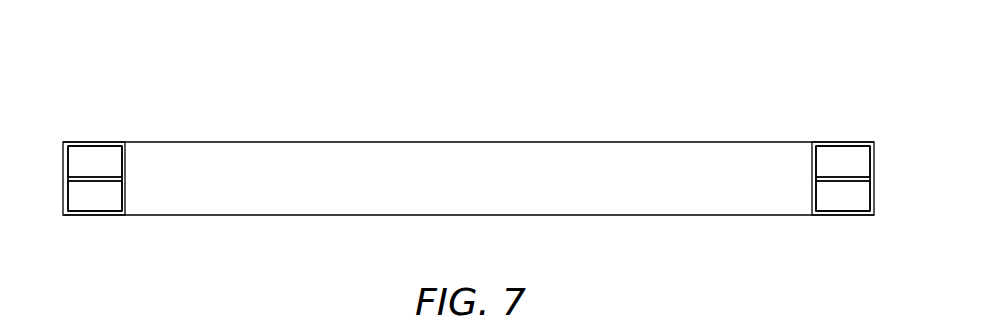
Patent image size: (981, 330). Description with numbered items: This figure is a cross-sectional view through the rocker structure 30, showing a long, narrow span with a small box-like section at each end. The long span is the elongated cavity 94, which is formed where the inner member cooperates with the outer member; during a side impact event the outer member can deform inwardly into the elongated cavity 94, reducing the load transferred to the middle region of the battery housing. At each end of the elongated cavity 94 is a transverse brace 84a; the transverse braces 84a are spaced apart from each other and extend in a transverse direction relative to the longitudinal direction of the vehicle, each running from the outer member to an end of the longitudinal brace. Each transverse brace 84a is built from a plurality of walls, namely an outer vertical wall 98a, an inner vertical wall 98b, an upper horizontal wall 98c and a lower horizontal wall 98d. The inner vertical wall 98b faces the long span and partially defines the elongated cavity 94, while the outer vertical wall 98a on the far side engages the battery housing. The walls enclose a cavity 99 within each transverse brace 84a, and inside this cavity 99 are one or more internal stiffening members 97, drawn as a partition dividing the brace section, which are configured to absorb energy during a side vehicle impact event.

The rocker structure 30 is at (176, 88).
The transverse brace 84a is at (71, 128).
The elongated cavity 94 is at (347, 188).
The internal stiffening member 97 is at (98, 184).
The outer vertical wall 98a is at (66, 166).
The inner vertical wall 98b is at (124, 192).
The upper horizontal wall 98c is at (94, 146).
The lower horizontal wall 98d is at (117, 207).
The cavity 99 is at (112, 160).